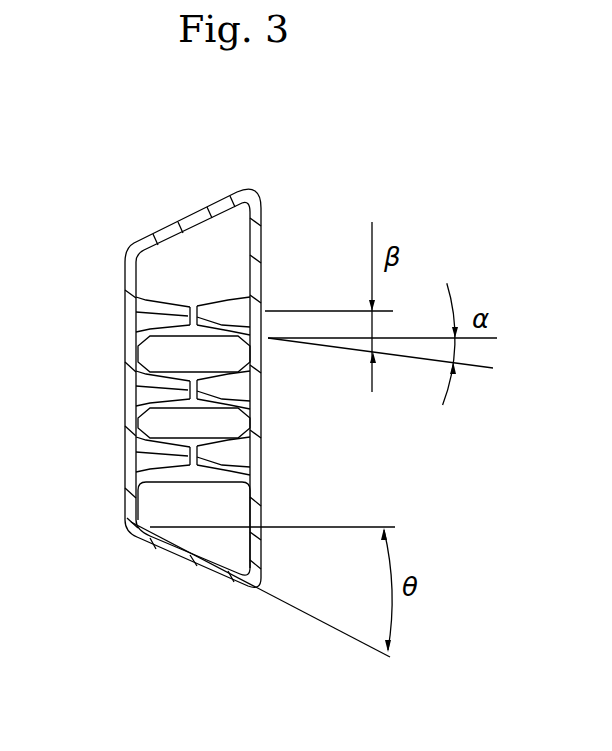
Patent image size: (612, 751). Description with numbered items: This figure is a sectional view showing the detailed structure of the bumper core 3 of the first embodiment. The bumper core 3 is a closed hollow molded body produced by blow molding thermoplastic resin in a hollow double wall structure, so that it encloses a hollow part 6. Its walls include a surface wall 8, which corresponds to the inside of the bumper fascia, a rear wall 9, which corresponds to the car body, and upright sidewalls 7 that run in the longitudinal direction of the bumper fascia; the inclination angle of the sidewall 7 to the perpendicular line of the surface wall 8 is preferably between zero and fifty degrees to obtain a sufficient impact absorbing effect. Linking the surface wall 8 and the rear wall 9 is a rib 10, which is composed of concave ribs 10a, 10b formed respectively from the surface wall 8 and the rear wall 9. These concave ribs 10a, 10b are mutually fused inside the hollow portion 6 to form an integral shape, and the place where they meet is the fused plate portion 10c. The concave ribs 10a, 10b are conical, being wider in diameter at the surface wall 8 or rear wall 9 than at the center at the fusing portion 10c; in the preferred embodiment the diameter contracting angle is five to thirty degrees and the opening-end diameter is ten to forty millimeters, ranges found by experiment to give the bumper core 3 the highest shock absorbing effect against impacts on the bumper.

The bumper core 3 is at (137, 215).
The hollow part 6 is at (207, 252).
The sidewall 7 is at (190, 213).
The surface wall 8 is at (125, 283).
The rear wall 9 is at (262, 268).
The rib 10 is at (150, 325).
The concave rib 10a is at (152, 470).
The concave rib 10b is at (240, 470).
The fused plate portion 10c is at (188, 322).